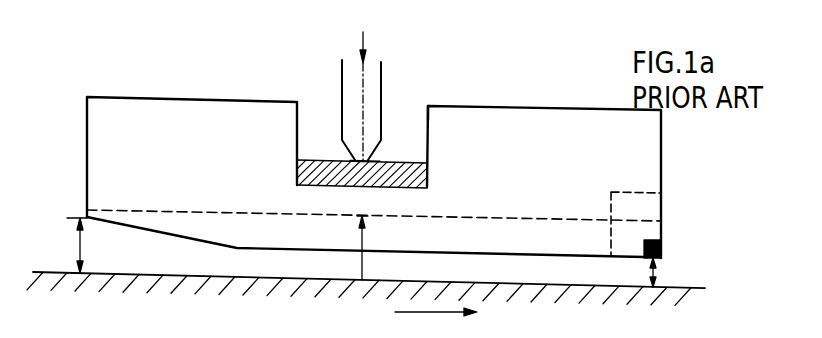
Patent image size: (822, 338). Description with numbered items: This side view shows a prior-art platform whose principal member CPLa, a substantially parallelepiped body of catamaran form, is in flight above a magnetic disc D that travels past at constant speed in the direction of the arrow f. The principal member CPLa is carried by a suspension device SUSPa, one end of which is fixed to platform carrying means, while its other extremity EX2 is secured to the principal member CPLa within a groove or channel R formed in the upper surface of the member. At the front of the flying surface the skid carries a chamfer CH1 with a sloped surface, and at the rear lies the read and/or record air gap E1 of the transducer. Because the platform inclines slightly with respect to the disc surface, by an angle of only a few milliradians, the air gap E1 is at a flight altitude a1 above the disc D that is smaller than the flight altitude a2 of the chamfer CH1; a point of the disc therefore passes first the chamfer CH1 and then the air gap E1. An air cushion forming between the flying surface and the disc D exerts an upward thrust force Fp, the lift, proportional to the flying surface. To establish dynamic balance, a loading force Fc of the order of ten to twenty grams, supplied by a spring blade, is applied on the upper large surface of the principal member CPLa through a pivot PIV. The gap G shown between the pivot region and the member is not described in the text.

The principal member CPLa is at (662, 133).
The chamfer CH1 is at (160, 233).
The suspension device SUSPa is at (423, 184).
The extremity of the suspension device EX2 is at (397, 160).
The pivot PIV is at (342, 78).
The loading force Fc is at (376, 96).
The gap G is at (427, 106).
The groove R is at (535, 220).
The air gap E1 is at (656, 240).
The flight altitude of the air gaps a1 is at (667, 273).
The flight altitude of the chamfer a2 is at (66, 245).
The thrust force Fp is at (373, 248).
The magnetic disc D is at (97, 273).
The direction of disc travel f is at (436, 320).